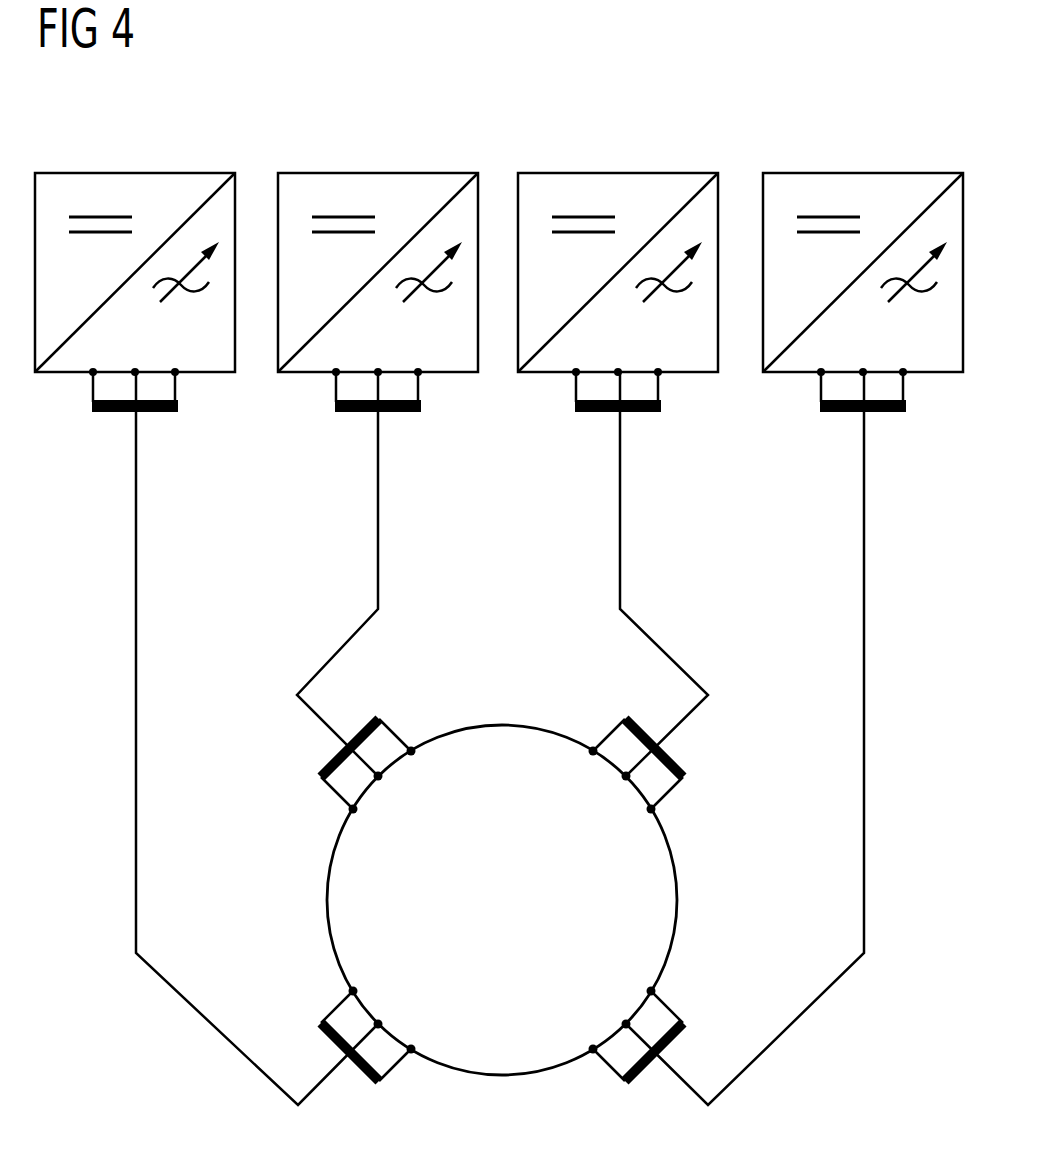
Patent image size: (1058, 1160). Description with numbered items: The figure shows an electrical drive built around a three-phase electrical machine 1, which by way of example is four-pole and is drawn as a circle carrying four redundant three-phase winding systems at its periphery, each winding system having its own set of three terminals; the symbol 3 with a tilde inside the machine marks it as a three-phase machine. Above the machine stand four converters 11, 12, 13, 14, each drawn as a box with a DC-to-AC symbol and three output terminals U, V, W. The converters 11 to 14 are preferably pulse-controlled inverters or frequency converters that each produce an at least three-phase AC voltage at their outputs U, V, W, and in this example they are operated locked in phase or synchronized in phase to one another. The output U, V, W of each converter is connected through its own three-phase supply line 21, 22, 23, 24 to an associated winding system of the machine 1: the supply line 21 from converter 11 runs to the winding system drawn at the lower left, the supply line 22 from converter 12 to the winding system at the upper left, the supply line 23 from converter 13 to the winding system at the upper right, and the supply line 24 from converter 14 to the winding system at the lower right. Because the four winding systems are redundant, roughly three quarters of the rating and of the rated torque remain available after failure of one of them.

The three-phase electrical machine 1 is at (502, 726).
The three-phase winding system 3 is at (502, 901).
The converter 11 is at (98, 173).
The converter 12 is at (378, 255).
The converter 13 is at (618, 255).
The converter 14 is at (863, 255).
The three-phase supply line 21 is at (137, 519).
The three-phase supply line 22 is at (379, 519).
The three-phase supply line 23 is at (621, 519).
The three-phase supply line 24 is at (865, 519).